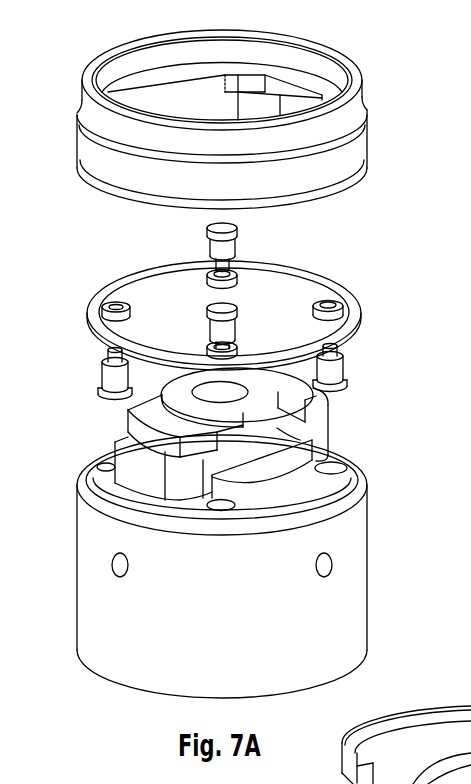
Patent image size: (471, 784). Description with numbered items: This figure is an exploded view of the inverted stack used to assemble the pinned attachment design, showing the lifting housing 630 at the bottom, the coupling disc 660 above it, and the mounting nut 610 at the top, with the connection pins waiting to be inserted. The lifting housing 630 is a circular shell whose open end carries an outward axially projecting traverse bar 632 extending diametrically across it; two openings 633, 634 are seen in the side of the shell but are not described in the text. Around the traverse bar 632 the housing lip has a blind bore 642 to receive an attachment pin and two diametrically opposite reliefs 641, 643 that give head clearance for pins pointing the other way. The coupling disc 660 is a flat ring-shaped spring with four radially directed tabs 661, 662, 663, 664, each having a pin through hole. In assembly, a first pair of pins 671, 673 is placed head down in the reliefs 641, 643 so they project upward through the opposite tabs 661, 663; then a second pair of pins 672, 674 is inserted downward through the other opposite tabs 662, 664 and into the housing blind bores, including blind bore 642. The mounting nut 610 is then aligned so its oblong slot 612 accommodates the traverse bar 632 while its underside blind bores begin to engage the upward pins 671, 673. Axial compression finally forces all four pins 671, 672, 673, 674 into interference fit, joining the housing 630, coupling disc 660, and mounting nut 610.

The mounting nut 610 is at (95, 108).
The oblong slot 612 is at (212, 108).
The lifting housing 630 is at (132, 657).
The traverse bar 632 is at (278, 428).
The side aperture 633 is at (332, 563).
The side aperture 634 is at (118, 563).
The relief 641 is at (347, 455).
The blind bore 642 is at (152, 489).
The relief 643 is at (88, 461).
The coupling disc 660 is at (320, 283).
The tab 661 is at (330, 295).
The tab 662 is at (208, 343).
The tab 663 is at (110, 297).
The tab 664 is at (237, 273).
The pin 671 is at (332, 368).
The pin 672 is at (215, 303).
The pin 673 is at (110, 375).
The pin 674 is at (215, 248).